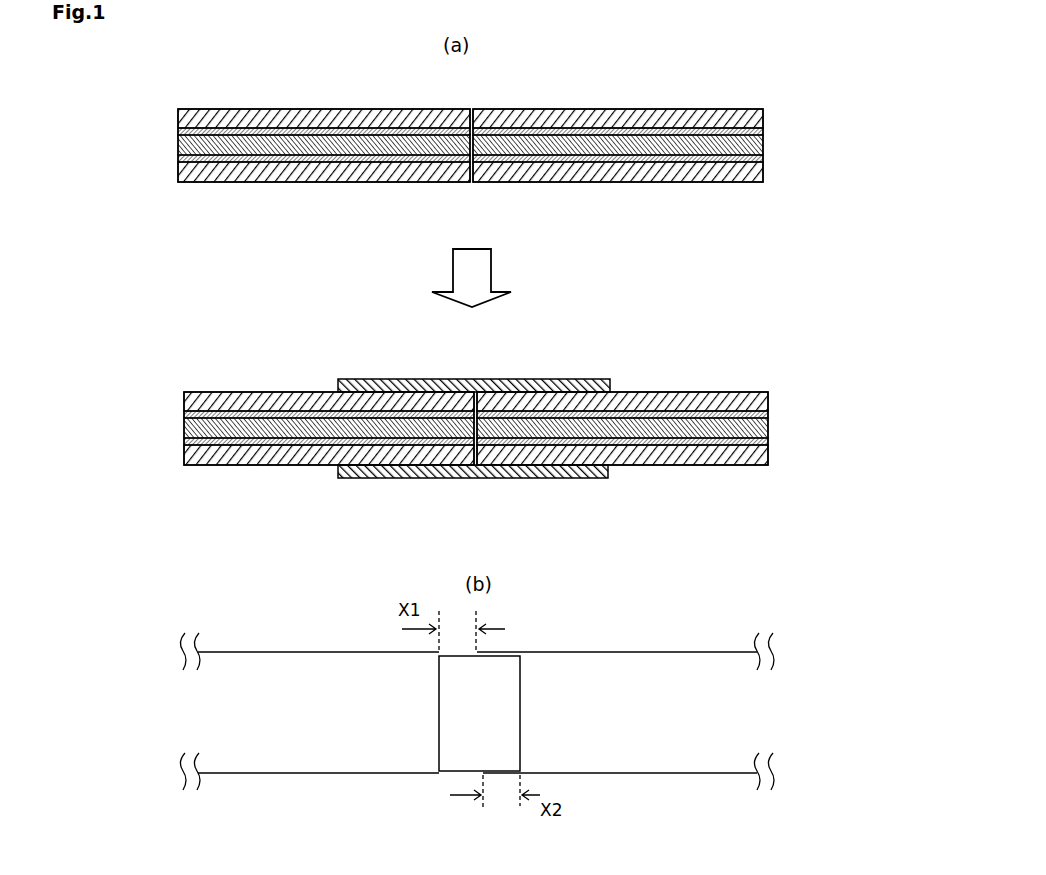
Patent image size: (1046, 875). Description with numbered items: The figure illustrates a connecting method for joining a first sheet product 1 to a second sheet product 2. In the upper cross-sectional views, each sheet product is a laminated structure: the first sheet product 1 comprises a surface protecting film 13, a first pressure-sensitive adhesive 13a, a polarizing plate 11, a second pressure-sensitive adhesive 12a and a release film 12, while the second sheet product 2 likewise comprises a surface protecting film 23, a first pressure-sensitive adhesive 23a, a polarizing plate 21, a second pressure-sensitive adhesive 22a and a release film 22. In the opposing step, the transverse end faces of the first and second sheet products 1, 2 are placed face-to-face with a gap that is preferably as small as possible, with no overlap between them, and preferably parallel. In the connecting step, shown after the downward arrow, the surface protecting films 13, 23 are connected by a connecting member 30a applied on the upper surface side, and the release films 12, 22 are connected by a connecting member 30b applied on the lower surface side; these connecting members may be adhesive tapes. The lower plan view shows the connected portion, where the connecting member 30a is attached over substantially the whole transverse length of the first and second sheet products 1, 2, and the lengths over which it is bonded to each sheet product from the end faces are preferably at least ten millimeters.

The first sheet product 1 is at (222, 84).
The second sheet product 2 is at (731, 84).
The polarizing plate 11 is at (178, 145).
The release film 12 is at (178, 170).
The second pressure-sensitive adhesive 12a is at (178, 158).
The surface protecting film 13 is at (178, 120).
The first pressure-sensitive adhesive 13a is at (178, 131).
The polarizing plate 21 is at (763, 145).
The release film 22 is at (763, 170).
The second pressure-sensitive adhesive 22a is at (763, 158).
The surface protecting film 23 is at (763, 120).
The first pressure-sensitive adhesive 23a is at (763, 131).
The connecting member 30a is at (423, 364).
The connecting member 30b is at (543, 488).